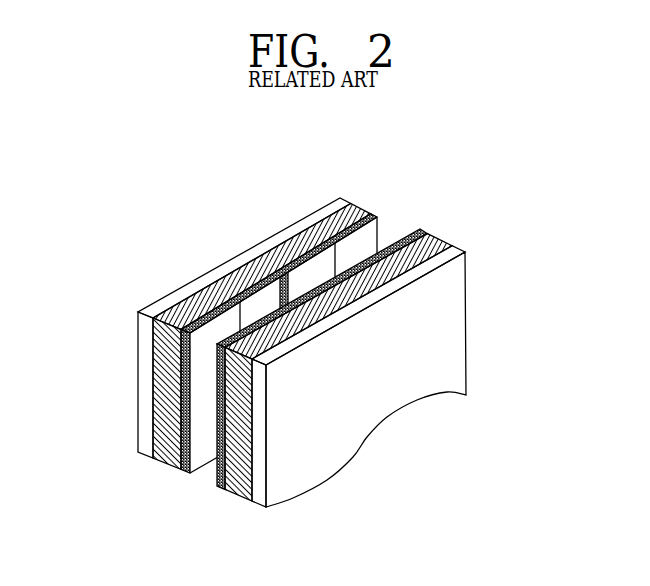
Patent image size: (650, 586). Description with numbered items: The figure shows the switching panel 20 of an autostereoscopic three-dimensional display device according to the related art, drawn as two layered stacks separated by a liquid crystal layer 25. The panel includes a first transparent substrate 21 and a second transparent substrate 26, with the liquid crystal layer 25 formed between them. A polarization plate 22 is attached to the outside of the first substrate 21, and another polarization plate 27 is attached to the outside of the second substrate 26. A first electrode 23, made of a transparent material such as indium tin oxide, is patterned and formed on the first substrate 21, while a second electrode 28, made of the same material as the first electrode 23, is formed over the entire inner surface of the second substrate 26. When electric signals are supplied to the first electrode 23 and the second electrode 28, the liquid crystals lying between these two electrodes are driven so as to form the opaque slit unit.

The switching panel 20 is at (122, 251).
The first transparent substrate 21 is at (362, 208).
The polarization plate 22 is at (336, 199).
The first electrode 23 is at (187, 474).
The liquid crystal layer 25 is at (208, 475).
The second transparent substrate 26 is at (433, 235).
The polarization plate 27 is at (450, 251).
The second electrode 28 is at (220, 488).